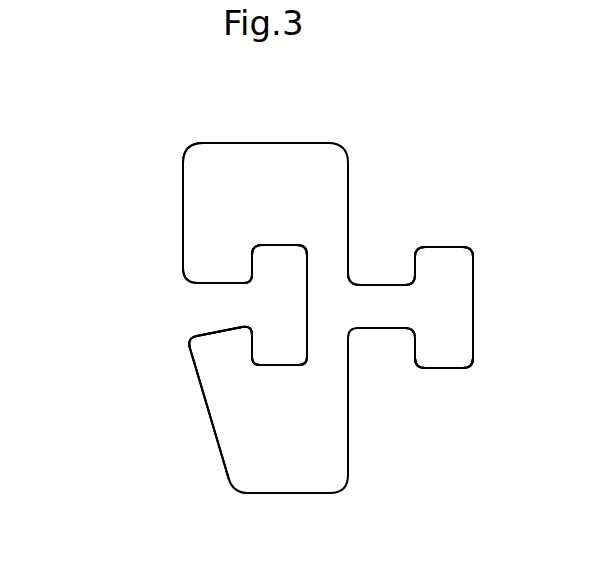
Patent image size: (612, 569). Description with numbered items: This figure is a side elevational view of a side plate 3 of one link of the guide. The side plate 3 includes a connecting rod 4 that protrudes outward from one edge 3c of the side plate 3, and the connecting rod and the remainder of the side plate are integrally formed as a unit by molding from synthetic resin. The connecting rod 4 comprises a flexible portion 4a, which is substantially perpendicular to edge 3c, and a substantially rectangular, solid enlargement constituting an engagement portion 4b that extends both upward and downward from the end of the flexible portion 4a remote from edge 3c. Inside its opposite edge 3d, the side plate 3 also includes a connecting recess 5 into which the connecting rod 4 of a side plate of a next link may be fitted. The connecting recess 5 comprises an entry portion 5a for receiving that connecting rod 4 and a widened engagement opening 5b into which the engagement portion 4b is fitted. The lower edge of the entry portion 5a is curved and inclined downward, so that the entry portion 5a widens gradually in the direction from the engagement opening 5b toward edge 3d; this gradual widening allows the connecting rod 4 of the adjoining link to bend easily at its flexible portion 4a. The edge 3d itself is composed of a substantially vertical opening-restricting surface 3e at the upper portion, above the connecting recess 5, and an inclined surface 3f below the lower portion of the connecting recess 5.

The side plate 3 is at (292, 166).
The edge 3c is at (374, 216).
The opposite edge 3d is at (166, 217).
The opening-restricting surface 3e is at (182, 173).
The inclined surface 3f is at (210, 427).
The connecting rod 4 is at (497, 422).
The flexible portion 4a is at (380, 315).
The engagement portion 4b is at (452, 348).
The connecting recess 5 is at (78, 245).
The entry portion 5a is at (220, 302).
The engagement opening 5b is at (265, 278).